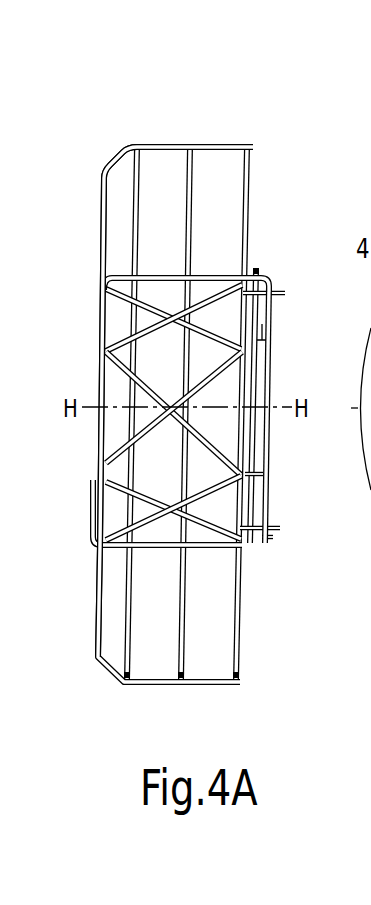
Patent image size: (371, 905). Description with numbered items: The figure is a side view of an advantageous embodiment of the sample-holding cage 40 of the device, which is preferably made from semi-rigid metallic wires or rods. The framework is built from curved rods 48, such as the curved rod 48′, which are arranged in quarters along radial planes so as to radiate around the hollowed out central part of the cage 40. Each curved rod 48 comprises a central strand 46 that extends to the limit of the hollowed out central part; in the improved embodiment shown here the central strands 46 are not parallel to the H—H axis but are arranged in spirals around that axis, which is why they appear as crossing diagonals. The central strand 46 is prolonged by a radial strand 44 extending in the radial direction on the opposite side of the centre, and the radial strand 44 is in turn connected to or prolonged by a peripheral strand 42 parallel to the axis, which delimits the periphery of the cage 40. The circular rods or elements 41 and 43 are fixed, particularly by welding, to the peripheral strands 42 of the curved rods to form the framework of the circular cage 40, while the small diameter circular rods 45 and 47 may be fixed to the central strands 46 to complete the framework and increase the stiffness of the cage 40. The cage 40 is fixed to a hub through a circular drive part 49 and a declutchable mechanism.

The cage 40 is at (119, 143).
The circular rod 41 is at (240, 153).
The peripheral strand 42 is at (232, 141).
The circular rod 43 is at (118, 164).
The radial strand 44 is at (100, 232).
The small diameter circular rod 45 is at (108, 307).
The central strand 46 is at (171, 322).
The small diameter circular rod 47 is at (257, 268).
The curved rod 48 is at (266, 275).
The curved rod 48′ is at (205, 299).
The circular drive part 49 is at (271, 540).